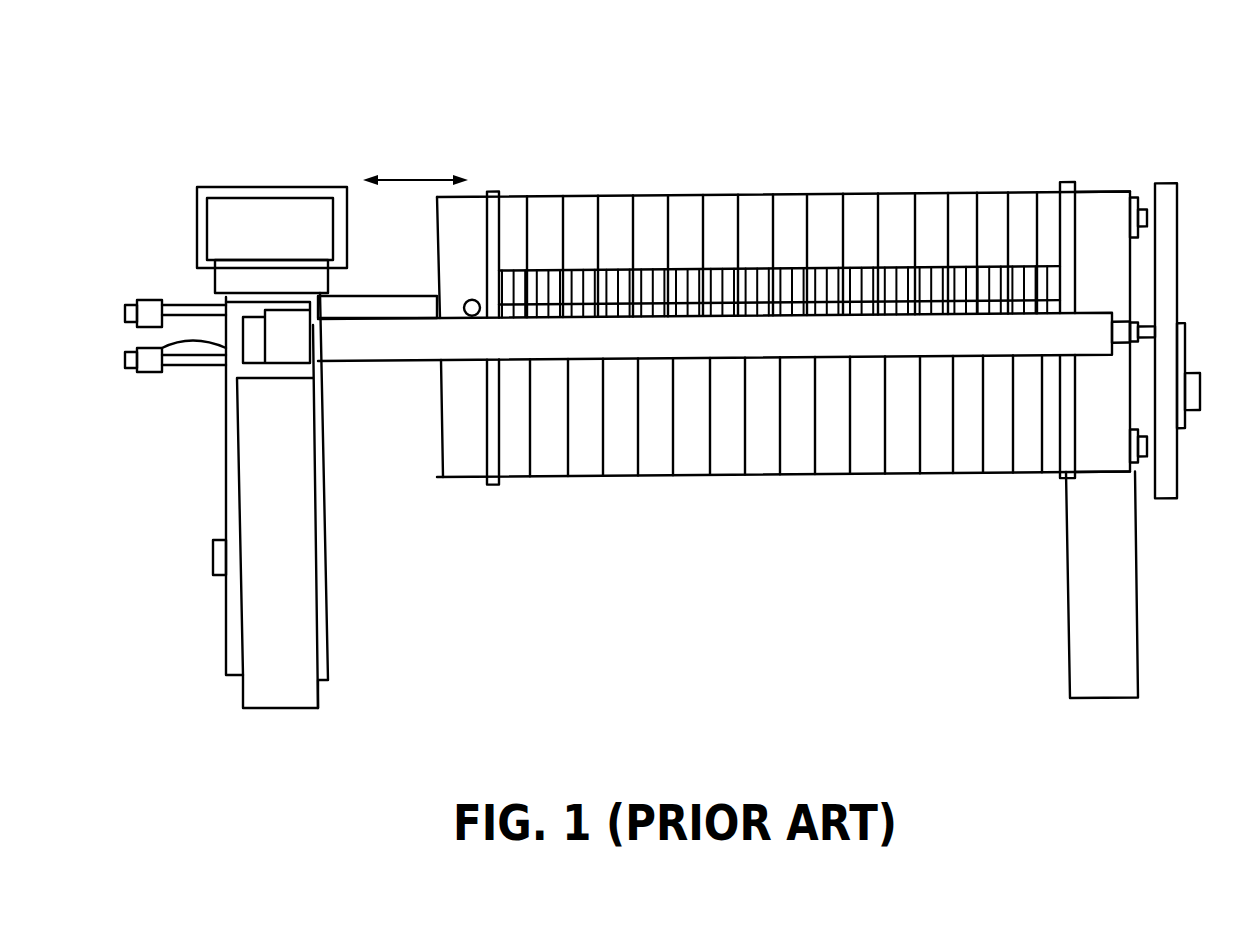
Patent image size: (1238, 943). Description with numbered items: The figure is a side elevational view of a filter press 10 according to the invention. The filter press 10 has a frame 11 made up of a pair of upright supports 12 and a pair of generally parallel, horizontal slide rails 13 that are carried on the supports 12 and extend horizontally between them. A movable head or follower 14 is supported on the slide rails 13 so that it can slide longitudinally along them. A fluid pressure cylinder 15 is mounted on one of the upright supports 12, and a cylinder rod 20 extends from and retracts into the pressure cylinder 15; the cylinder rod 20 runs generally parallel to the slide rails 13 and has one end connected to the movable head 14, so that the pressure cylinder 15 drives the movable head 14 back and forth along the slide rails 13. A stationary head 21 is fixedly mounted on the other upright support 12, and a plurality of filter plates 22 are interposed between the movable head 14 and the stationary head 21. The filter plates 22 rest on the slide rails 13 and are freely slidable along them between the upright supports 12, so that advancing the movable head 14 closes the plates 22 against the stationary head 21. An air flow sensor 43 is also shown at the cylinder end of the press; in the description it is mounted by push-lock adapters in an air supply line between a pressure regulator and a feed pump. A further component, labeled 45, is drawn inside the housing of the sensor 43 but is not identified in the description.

The filter press 10 is at (984, 137).
The frame 11 is at (995, 586).
The upright supports 12 is at (293, 595).
The slide rails 13 is at (355, 342).
The movable head 14 is at (468, 455).
The fluid pressure cylinder 15 is at (187, 323).
The cylinder rod 20 is at (375, 307).
The stationary head 21 is at (1110, 272).
The filter plates 22 is at (723, 205).
The air flow sensor 43 is at (200, 213).
The drive motor 45 is at (267, 215).